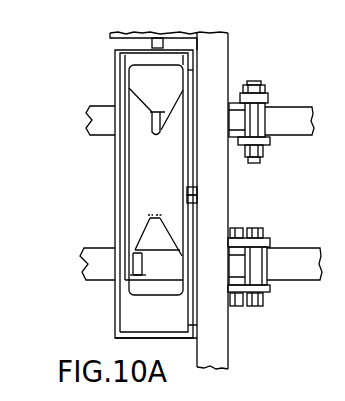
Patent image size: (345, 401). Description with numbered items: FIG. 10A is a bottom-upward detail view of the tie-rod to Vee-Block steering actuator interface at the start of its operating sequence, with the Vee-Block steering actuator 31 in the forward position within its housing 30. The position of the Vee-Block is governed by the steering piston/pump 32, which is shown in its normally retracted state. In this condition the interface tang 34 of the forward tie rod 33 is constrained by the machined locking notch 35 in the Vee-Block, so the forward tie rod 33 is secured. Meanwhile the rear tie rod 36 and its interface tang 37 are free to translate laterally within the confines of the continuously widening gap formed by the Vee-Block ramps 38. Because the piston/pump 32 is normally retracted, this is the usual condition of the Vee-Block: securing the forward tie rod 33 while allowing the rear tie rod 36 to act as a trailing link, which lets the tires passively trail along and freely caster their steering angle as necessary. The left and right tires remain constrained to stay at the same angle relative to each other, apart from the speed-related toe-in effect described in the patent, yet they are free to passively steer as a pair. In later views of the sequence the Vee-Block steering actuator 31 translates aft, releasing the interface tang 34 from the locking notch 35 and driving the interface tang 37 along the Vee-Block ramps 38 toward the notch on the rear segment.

The housing 30 is at (113, 197).
The Vee-Block steering actuator 31 is at (144, 210).
The steering piston/pump 32 is at (201, 42).
The forward tie rod 33 is at (277, 124).
The interface tang 34 is at (151, 107).
The machined locking notch 35 is at (149, 128).
The rear tie rod 36 is at (278, 266).
The interface tang 37 is at (128, 272).
The Vee-Block ramps 38 is at (168, 227).